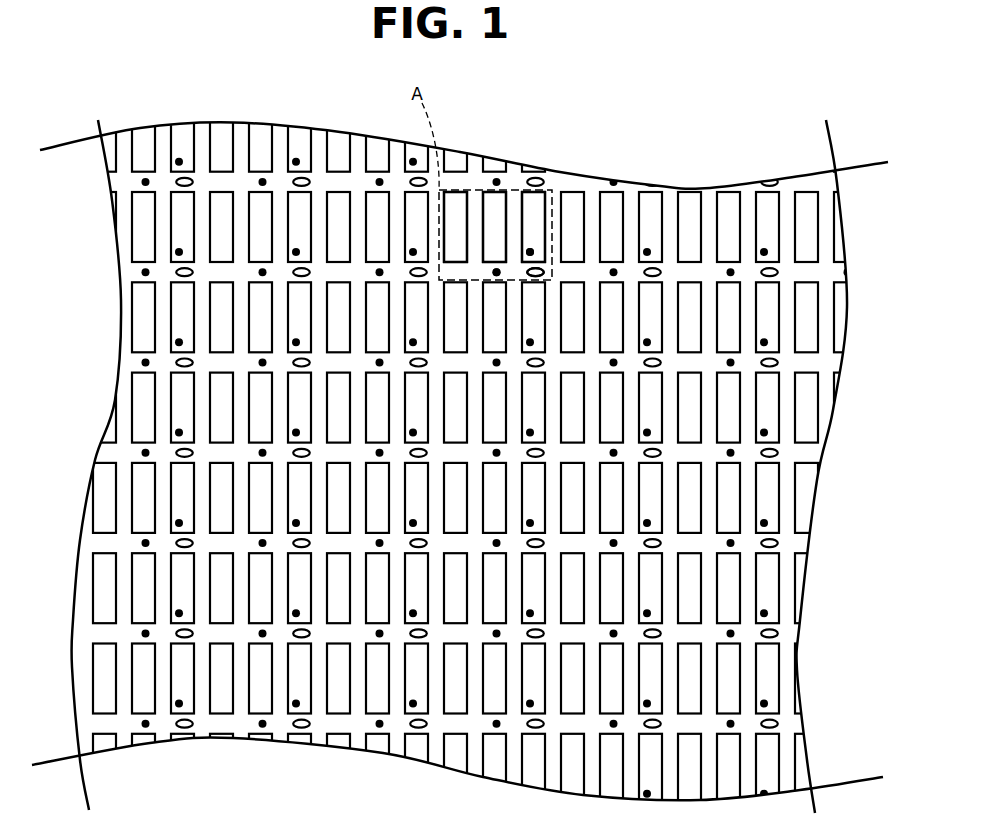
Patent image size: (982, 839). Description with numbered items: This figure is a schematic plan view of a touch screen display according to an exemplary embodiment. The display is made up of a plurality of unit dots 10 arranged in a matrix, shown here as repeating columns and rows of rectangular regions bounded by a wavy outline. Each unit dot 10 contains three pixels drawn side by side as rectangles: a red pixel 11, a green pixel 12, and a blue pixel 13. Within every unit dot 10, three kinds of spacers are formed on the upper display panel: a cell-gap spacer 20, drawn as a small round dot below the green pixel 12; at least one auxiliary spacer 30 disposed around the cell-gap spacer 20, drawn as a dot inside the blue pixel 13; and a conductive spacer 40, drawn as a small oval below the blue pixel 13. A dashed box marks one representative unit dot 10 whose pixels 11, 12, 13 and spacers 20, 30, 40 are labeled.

The unit dot 10 is at (457, 91).
The red pixel 11 is at (457, 202).
The green pixel 12 is at (495, 202).
The blue pixel 13 is at (533, 202).
The cell-gap spacer 20 is at (497, 272).
The auxiliary spacer 30 is at (530, 252).
The conductive spacer 40 is at (535, 272).